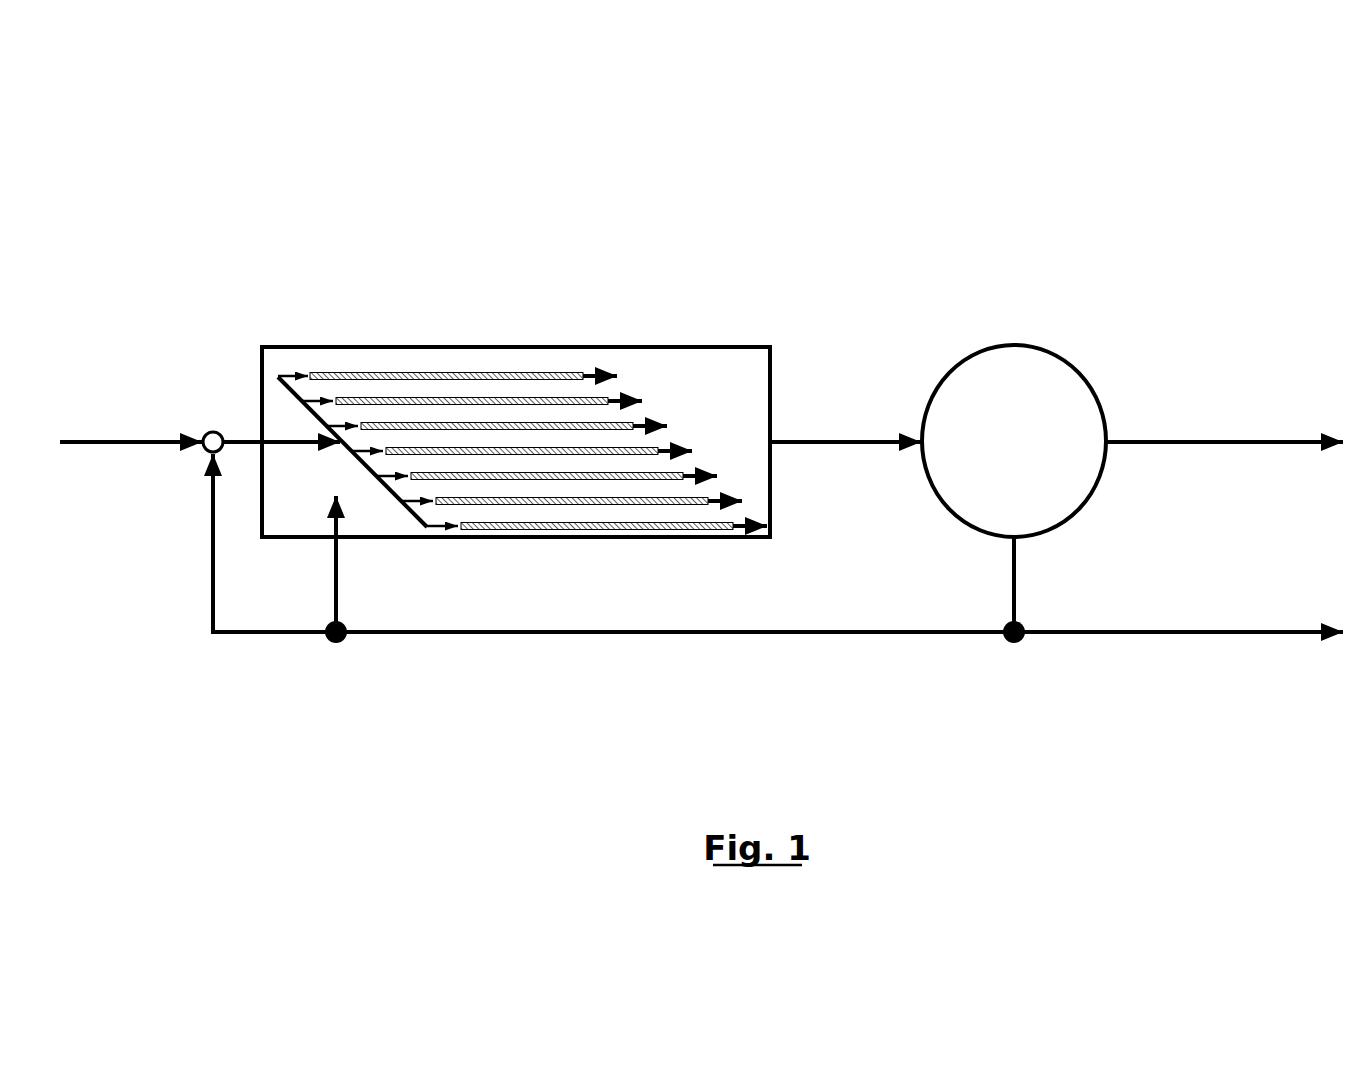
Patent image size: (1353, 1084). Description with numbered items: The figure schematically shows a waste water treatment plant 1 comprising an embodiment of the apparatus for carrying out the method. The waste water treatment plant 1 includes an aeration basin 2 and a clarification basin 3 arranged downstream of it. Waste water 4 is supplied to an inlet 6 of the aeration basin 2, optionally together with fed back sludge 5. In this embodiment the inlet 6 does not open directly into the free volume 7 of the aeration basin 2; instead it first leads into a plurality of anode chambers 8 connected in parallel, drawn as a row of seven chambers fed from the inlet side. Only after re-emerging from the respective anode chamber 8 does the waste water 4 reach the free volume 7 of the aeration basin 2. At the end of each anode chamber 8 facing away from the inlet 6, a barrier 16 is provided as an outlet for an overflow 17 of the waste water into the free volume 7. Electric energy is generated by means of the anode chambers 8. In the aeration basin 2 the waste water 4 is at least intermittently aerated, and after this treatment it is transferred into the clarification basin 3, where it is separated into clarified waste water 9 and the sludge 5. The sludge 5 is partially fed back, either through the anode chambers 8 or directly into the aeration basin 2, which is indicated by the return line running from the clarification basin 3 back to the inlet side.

The waste water treatment plant 1 is at (1188, 250).
The aeration basin 2 is at (435, 345).
The clarification basin 3 is at (1028, 346).
The waste water 4 is at (120, 445).
The sludge 5 is at (295, 635).
The inlet 6 is at (237, 440).
The free volume 7 is at (697, 390).
The anode chambers 8 is at (603, 524).
The clarified waste water 9 is at (1228, 445).
The barrier 16 is at (667, 425).
The overflow 17 is at (733, 502).